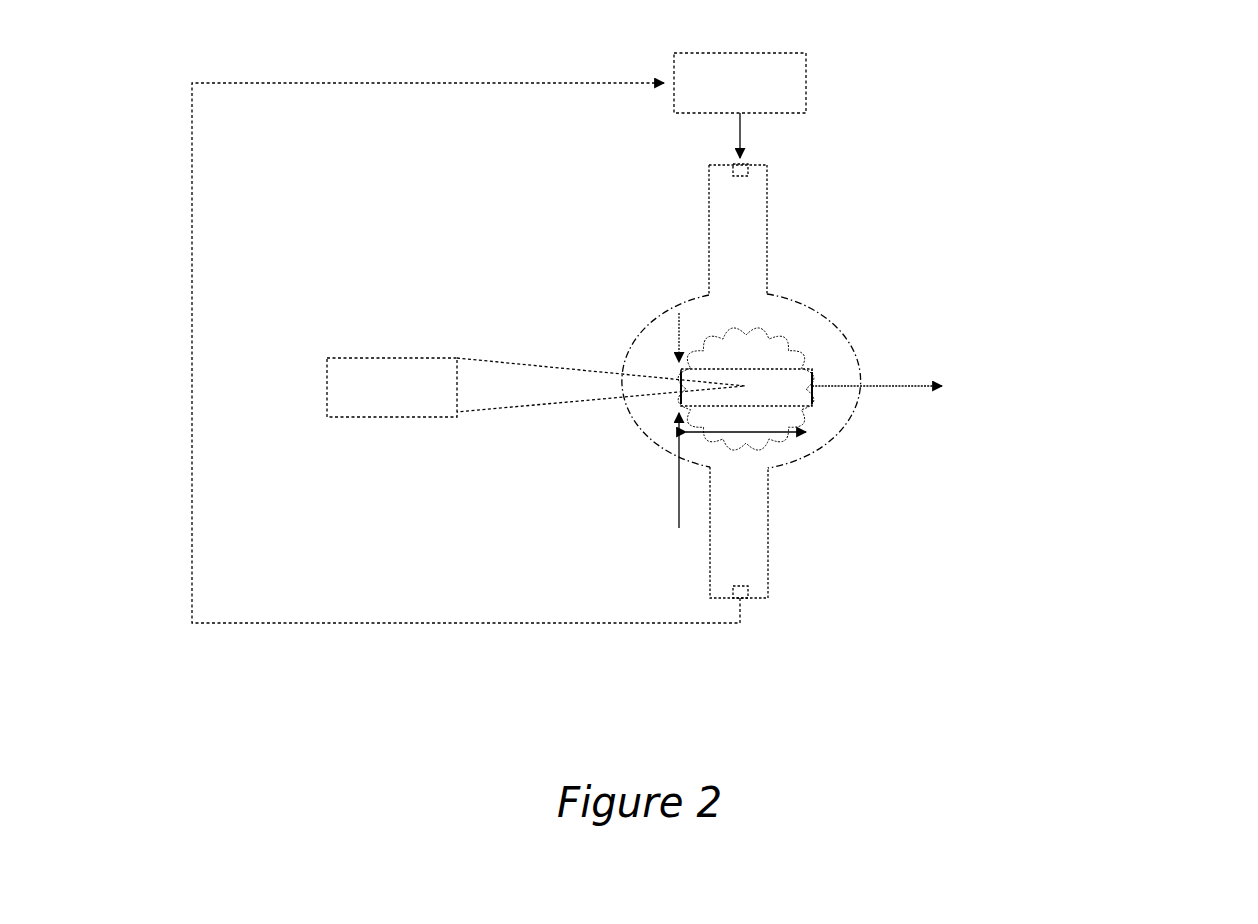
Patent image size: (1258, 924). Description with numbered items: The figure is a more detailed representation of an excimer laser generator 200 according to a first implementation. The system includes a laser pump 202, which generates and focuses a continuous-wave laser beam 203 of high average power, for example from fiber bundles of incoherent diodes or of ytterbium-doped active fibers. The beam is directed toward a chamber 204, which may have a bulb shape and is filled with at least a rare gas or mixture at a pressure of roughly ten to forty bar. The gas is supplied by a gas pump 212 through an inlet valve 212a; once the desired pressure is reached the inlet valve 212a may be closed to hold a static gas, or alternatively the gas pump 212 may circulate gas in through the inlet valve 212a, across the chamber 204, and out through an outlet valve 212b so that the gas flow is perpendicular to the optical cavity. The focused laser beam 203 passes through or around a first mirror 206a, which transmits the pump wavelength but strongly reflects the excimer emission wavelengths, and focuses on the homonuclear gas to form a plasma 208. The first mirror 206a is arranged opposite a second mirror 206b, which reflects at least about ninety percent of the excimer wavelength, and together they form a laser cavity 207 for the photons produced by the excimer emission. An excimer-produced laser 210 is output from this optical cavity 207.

The excimer laser generator 200 is at (1172, 108).
The laser pump 202 is at (327, 368).
The cw laser beam 203 is at (605, 385).
The chamber 204 is at (709, 292).
The first mirror 206a is at (677, 382).
The second mirror 206b is at (810, 370).
The laser cavity 207 is at (776, 369).
The plasma 208 is at (745, 335).
The excimer-produced laser 210 is at (895, 386).
The gas pump 212 is at (806, 88).
The inlet valve 212a is at (748, 168).
The outlet valve 212b is at (748, 596).